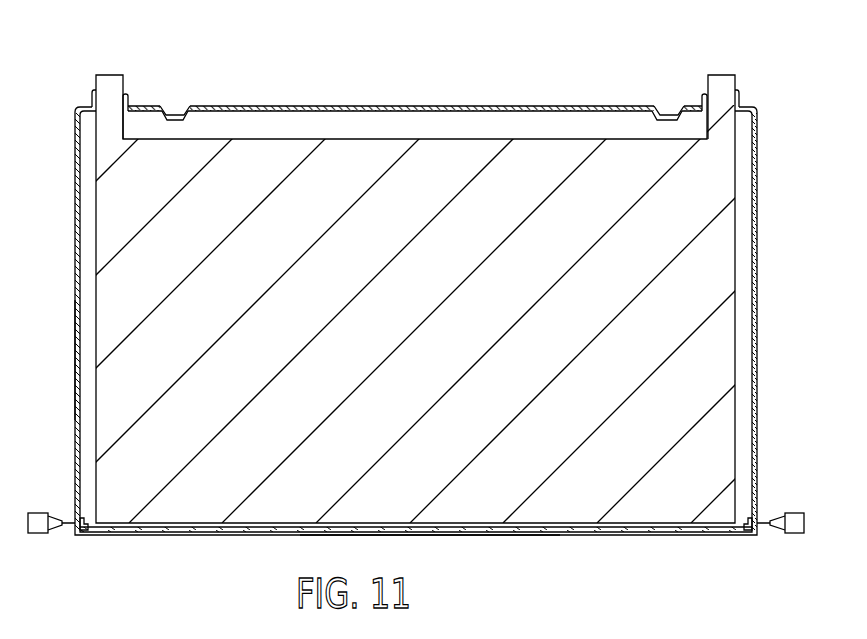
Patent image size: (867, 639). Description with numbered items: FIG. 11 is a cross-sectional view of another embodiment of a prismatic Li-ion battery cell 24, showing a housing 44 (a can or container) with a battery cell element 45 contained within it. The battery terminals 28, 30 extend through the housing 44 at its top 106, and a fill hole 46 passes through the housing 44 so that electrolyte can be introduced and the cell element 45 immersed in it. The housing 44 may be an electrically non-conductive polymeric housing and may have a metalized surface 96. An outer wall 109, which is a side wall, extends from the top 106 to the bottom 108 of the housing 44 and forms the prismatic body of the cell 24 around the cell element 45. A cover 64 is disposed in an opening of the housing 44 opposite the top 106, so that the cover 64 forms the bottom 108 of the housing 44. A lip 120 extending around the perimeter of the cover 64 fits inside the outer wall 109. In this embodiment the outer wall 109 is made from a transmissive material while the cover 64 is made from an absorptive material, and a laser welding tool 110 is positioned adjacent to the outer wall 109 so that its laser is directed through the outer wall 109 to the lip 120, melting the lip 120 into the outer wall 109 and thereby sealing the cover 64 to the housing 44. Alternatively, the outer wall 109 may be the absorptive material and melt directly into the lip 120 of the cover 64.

The Li-ion battery cell 24 is at (780, 91).
The battery terminal 28 is at (110, 97).
The battery terminal 30 is at (722, 97).
The housing 44 is at (757, 279).
The battery cell element 45 is at (715, 186).
The fill hole 46 is at (176, 106).
The cover 64 is at (565, 532).
The metalized surface 96 is at (75, 253).
The top 106 is at (420, 106).
The bottom 108 is at (489, 553).
The outer wall 109 is at (75, 368).
The laser welding tool 110 is at (38, 522).
The lip 120 is at (88, 529).